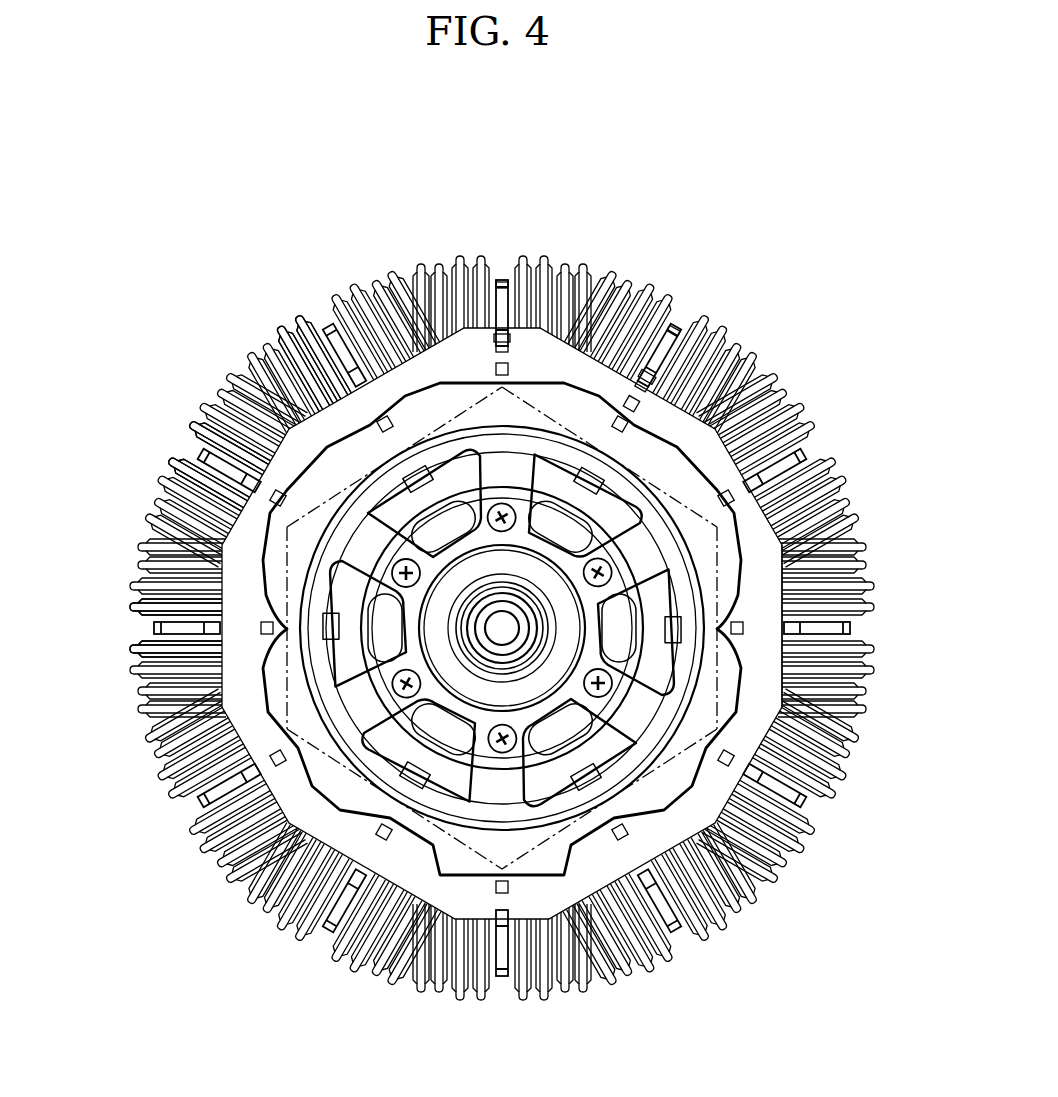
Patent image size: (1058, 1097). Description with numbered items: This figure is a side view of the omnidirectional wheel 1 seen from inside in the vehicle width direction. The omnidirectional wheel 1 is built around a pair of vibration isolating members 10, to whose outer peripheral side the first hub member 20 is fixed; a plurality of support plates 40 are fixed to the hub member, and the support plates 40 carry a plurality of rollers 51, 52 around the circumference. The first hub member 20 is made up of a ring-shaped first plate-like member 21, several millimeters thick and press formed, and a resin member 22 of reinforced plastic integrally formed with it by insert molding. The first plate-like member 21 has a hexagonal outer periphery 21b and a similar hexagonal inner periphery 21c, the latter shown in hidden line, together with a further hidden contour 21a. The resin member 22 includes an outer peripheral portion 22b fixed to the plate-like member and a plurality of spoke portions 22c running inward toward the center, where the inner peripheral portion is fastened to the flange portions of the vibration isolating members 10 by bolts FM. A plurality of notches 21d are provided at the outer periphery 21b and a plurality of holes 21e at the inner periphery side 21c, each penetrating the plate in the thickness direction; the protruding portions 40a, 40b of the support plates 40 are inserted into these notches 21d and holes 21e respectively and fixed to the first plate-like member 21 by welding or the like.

The omnidirectional wheel 1 is at (268, 940).
The vibration isolating member 10 is at (568, 629).
The first hub member 20 is at (572, 890).
The first plate-like member 21 is at (703, 820).
The plate inclined portion 21a is at (695, 763).
The outer periphery 21b is at (800, 556).
The inner periphery 21c is at (720, 702).
The notch 21d is at (505, 346).
The hole 21e is at (508, 368).
The resin member 22 is at (447, 860).
The outer peripheral portion 22b is at (676, 462).
The spoke portion 22c is at (648, 713).
The support plate 40 is at (503, 280).
The protruding portion 40a is at (496, 330).
The protruding portion 40b is at (493, 342).
The roller 51 is at (215, 440).
The roller 52 is at (350, 298).
The bolt FM is at (502, 504).